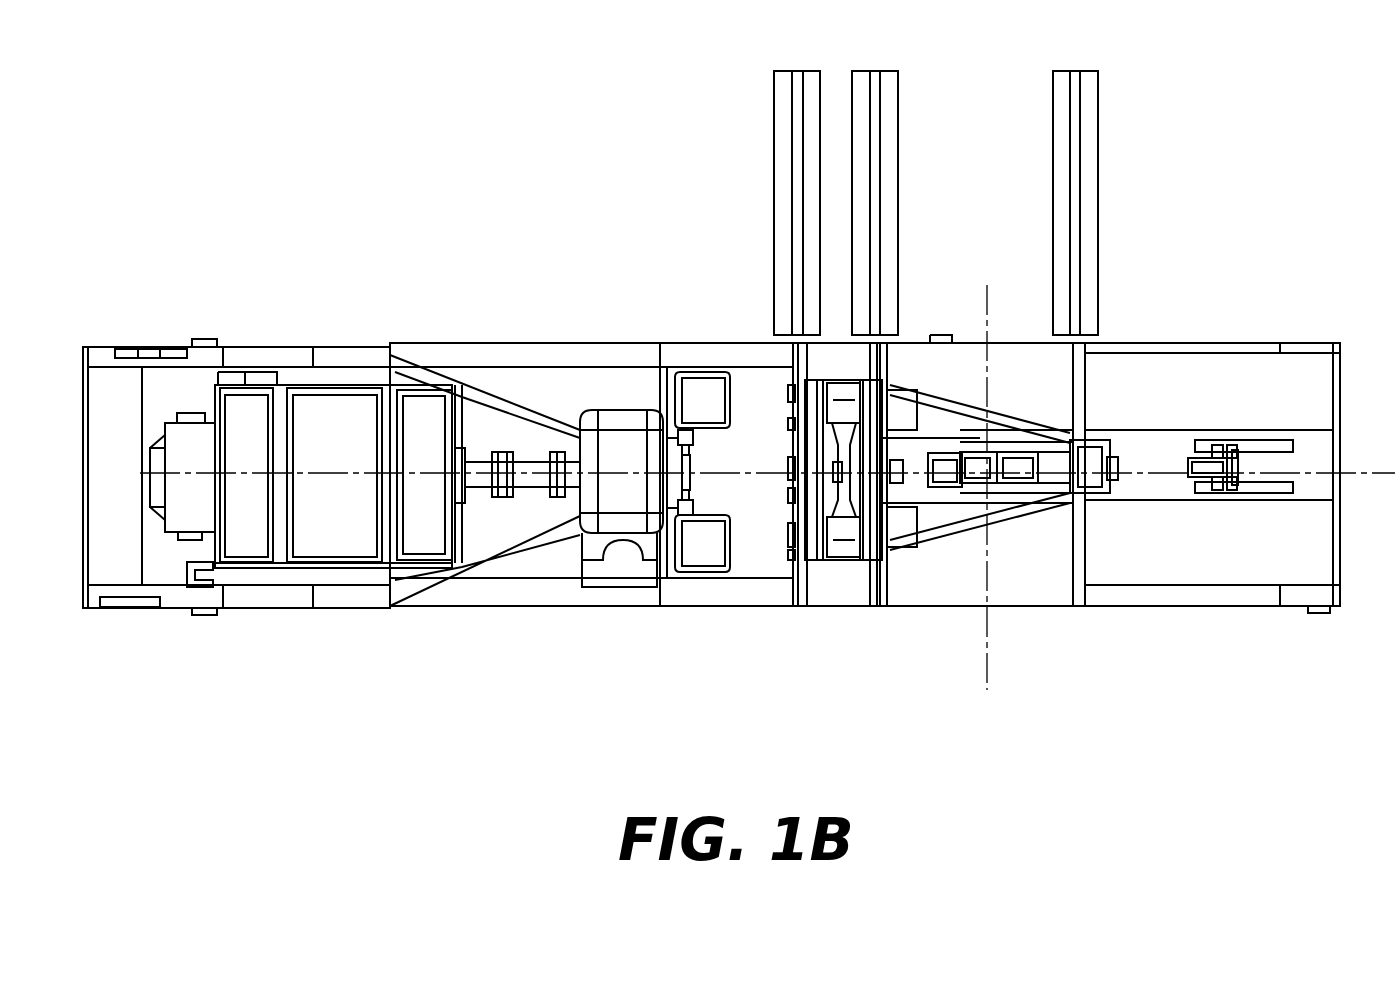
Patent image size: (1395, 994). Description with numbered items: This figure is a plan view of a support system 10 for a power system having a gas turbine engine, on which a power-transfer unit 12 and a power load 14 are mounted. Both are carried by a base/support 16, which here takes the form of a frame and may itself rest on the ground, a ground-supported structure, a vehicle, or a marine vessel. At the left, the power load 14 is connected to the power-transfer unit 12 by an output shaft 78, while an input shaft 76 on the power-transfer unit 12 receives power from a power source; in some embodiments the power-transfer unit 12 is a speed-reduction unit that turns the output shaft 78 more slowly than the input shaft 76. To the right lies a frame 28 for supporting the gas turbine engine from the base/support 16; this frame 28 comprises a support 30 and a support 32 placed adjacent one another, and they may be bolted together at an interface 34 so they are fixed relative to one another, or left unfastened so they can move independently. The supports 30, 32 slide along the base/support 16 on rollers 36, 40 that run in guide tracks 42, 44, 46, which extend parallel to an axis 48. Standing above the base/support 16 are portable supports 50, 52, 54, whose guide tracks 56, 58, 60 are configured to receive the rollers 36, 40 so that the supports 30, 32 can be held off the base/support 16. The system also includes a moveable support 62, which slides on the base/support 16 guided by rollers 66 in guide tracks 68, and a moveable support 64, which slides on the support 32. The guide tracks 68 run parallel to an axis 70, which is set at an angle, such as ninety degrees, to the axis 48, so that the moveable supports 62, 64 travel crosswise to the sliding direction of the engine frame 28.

The support system 10 is at (620, 235).
The power-transfer unit 12 is at (620, 350).
The power load 14 is at (335, 388).
The base/support 16 is at (748, 608).
The frame 28 is at (902, 592).
The support 30 is at (835, 580).
The support 32 is at (970, 530).
The interface 34 is at (873, 606).
The rollers 36 is at (785, 606).
The rollers 40 is at (1107, 480).
The guide tracks 42 is at (770, 343).
The guide tracks 44 is at (878, 352).
The guide tracks 46 is at (1095, 355).
The axis 48 is at (992, 645).
The portable supports 50 is at (778, 107).
The portable supports 52 is at (887, 90).
The portable supports 54 is at (1057, 107).
The guide tracks 56 is at (795, 163).
The guide tracks 58 is at (870, 178).
The guide tracks 60 is at (1077, 138).
The moveable support 62 is at (1240, 473).
The moveable support 64 is at (993, 462).
The rollers 66 is at (1225, 440).
The guide tracks 68 is at (1287, 440).
The axis 70 is at (1372, 478).
The input shaft 76 is at (690, 430).
The output shaft 78 is at (540, 348).